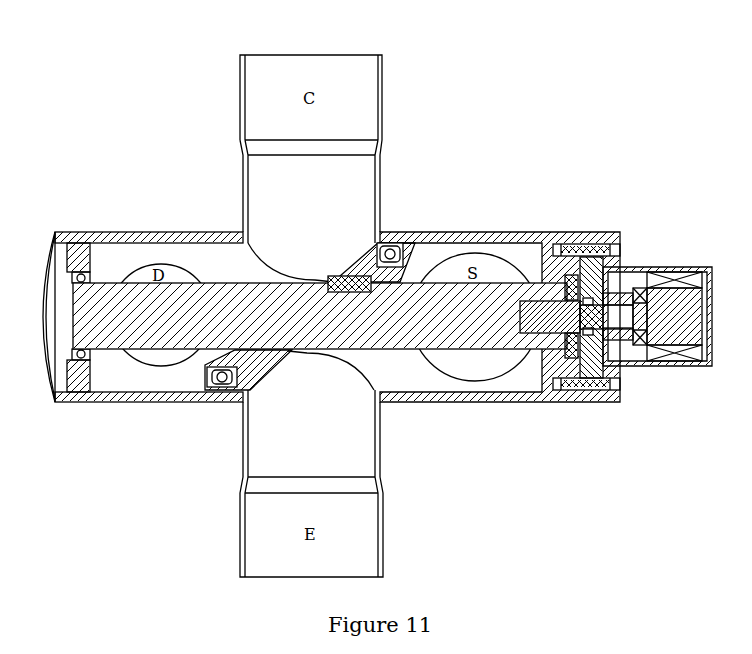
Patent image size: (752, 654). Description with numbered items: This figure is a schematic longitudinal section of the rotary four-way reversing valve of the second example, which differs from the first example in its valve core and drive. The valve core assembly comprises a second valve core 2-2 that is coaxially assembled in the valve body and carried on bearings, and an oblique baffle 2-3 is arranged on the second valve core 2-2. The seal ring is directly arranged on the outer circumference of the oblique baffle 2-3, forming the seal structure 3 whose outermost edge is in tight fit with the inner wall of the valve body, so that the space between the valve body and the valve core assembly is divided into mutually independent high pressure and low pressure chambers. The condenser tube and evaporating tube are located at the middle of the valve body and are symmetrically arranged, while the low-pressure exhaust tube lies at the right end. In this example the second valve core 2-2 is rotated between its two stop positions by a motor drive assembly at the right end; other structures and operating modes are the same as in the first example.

The second valve core 2-2 is at (107, 308).
The oblique baffle 2-3 is at (345, 274).
The seal structure 3 is at (390, 245).